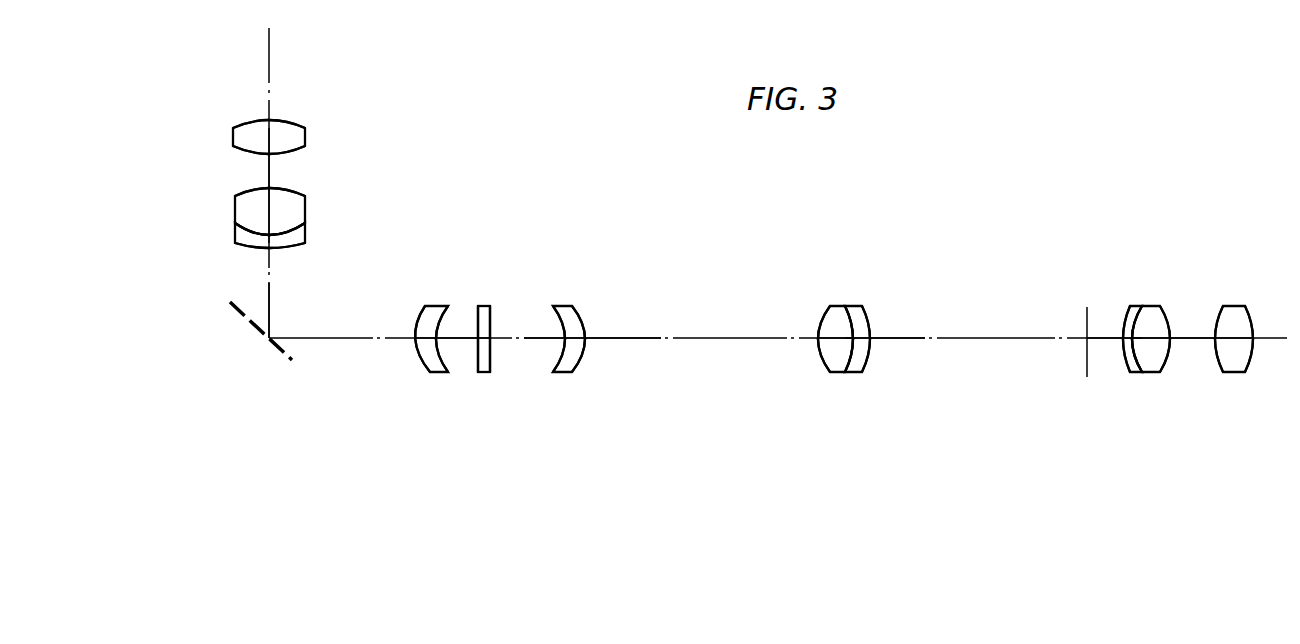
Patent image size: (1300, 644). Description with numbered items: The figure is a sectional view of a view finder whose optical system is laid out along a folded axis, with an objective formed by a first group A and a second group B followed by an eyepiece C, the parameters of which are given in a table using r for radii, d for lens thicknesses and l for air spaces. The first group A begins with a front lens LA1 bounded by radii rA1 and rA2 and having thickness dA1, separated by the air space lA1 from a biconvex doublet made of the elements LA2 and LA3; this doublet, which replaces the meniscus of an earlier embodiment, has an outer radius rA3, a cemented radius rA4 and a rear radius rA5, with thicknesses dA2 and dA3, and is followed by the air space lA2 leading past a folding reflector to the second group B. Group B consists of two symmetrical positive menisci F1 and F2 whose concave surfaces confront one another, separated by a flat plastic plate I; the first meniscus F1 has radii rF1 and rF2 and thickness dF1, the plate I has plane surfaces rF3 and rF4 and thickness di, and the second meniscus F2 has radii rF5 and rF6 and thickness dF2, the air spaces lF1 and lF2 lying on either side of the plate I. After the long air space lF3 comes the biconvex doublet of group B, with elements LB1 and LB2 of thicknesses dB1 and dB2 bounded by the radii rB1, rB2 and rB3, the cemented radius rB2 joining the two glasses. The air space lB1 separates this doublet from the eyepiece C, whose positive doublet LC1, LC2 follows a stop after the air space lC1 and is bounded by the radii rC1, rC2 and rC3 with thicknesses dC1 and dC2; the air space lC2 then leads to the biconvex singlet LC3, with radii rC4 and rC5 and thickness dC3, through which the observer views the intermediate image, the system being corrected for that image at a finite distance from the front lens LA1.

The first group A is at (380, 107).
The lens LA1 is at (310, 137).
The doublet element LA2 is at (310, 208).
The doublet element LA3 is at (310, 233).
The radius rA1 is at (247, 121).
The radius rA2 is at (247, 151).
The radius rA3 is at (247, 191).
The radius rA4 is at (236, 229).
The radius rA5 is at (247, 251).
The thickness dA1 is at (266, 133).
The thickness dA2 is at (266, 202).
The thickness dA3 is at (266, 243).
The air space lA1 is at (266, 172).
The air space lA2 is at (273, 302).
The second group B is at (885, 245).
The positive meniscus F1 is at (436, 300).
The flat plate I is at (487, 300).
The positive meniscus F2 is at (565, 300).
The radius rF1 is at (423, 362).
The radius rF2 is at (438, 362).
The radius rF3 is at (478, 362).
The radius rF4 is at (490, 362).
The radius rF5 is at (555, 362).
The radius rF6 is at (572, 362).
The thickness dF1 is at (427, 345).
The thickness di is at (485, 345).
The thickness dF2 is at (572, 345).
The air space lF1 is at (458, 345).
The air space lF2 is at (524, 345).
The air space lF3 is at (702, 345).
The doublet element LB1 is at (835, 302).
The doublet element LB2 is at (859, 302).
The radius rB1 is at (825, 362).
The radius rB2 is at (840, 362).
The radius rB3 is at (870, 362).
The thickness dB1 is at (830, 345).
The thickness dB2 is at (862, 345).
The air space lB1 is at (980, 345).
The eyepiece C is at (1263, 245).
The doublet element LC1 is at (1133, 302).
The doublet element LC2 is at (1158, 302).
The biconvex singlet LC3 is at (1232, 302).
The radius rC1 is at (1127, 362).
The radius rC2 is at (1140, 362).
The radius rC3 is at (1165, 362).
The radius rC4 is at (1225, 362).
The radius rC5 is at (1247, 362).
The thickness dC1 is at (1129, 345).
The thickness dC2 is at (1160, 345).
The thickness dC3 is at (1236, 345).
The air space lC1 is at (1095, 345).
The air space lC2 is at (1195, 345).